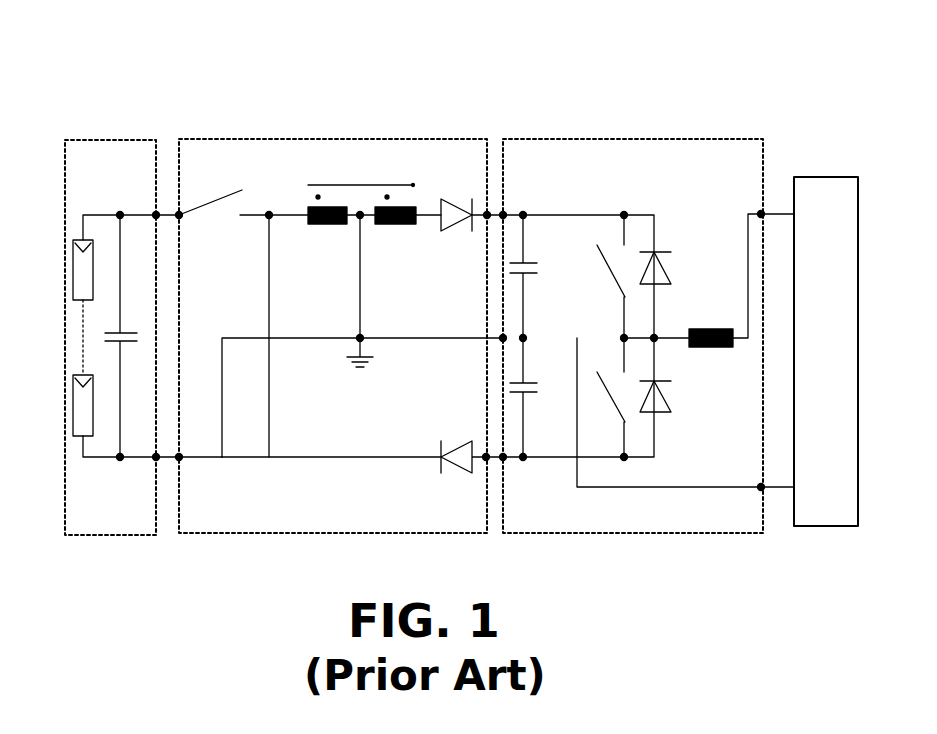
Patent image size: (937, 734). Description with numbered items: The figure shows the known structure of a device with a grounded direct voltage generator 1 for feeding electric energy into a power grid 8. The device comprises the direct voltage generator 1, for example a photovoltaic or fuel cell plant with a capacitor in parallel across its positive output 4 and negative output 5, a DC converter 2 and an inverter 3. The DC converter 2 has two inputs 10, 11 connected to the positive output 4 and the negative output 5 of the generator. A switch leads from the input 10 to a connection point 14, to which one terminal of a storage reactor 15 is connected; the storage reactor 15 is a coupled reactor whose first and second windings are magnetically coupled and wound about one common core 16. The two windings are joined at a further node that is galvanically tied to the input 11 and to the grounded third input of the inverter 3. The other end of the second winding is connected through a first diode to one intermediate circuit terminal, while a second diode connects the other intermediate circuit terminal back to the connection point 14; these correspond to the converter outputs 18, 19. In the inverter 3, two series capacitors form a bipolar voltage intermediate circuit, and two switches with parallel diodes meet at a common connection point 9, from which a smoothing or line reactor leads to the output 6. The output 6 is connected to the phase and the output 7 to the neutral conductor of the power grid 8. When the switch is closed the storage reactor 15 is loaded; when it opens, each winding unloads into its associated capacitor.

The direct voltage generator 1 is at (141, 140).
The DC converter 2 is at (337, 137).
The inverter 3 is at (598, 136).
The output 4 is at (156, 215).
The output 5 is at (156, 457).
The output 6 is at (761, 214).
The output 7 is at (761, 487).
The power grid 8 is at (809, 172).
The connection point 9 is at (624, 338).
The input 10 is at (179, 215).
The input 11 is at (179, 457).
The connection point 14 is at (270, 215).
The storage reactor 15 is at (365, 195).
The core 16 is at (410, 185).
The output 18 is at (487, 215).
The output 19 is at (486, 457).